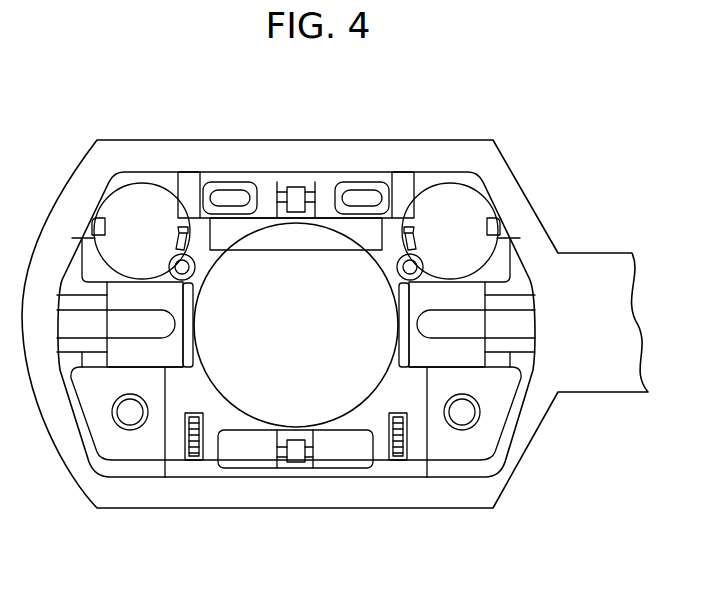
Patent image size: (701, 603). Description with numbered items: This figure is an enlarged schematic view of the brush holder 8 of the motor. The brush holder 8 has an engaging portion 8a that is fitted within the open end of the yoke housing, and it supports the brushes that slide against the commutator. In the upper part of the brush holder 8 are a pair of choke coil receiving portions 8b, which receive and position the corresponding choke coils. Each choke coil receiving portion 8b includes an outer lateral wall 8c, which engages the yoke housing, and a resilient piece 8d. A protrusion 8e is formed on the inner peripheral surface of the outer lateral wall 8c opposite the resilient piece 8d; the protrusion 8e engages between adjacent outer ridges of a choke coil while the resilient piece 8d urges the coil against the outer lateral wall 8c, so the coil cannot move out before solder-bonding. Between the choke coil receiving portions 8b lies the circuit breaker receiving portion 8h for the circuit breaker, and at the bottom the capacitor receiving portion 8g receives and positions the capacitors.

The brush holder 8 is at (512, 478).
The engaging portion 8a is at (143, 468).
The choke coil receiving portion 8b is at (143, 185).
The outer lateral wall 8c is at (110, 178).
The resilient piece 8d is at (178, 227).
The protrusion 8e is at (98, 212).
The capacitor receiving portion 8g is at (340, 458).
The circuit breaker receiving portion 8h is at (325, 185).